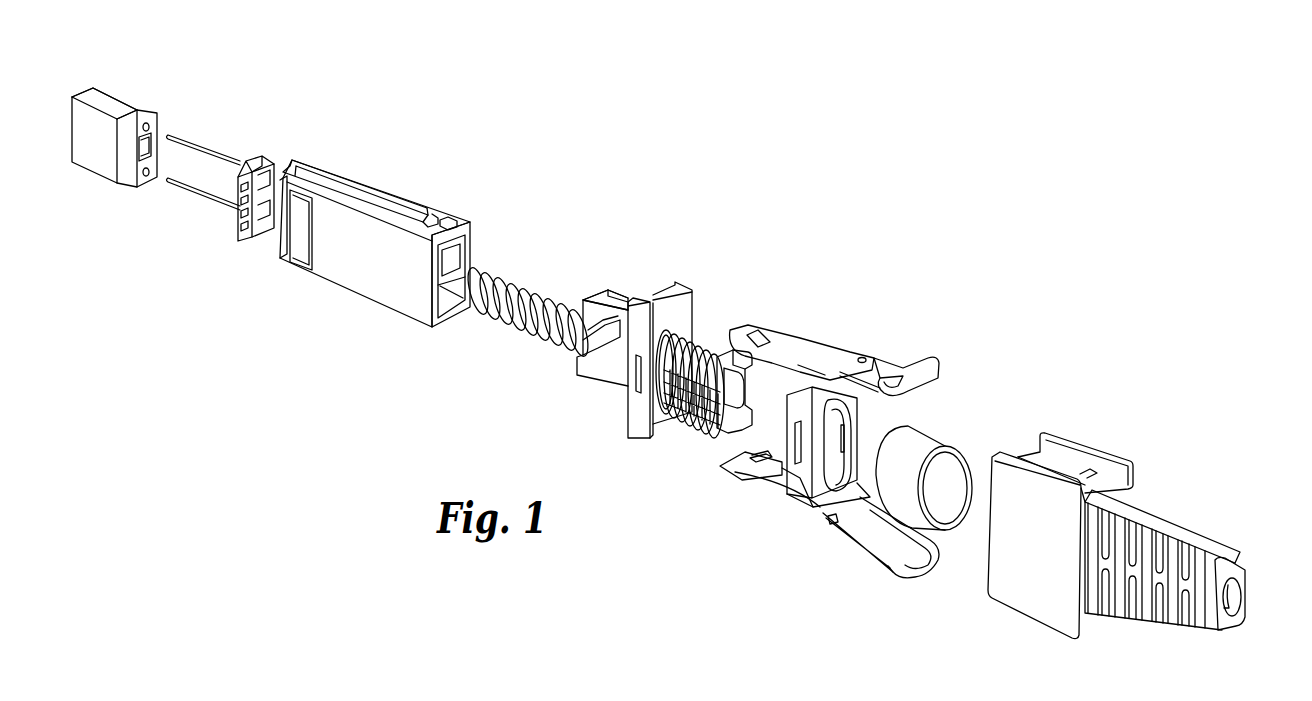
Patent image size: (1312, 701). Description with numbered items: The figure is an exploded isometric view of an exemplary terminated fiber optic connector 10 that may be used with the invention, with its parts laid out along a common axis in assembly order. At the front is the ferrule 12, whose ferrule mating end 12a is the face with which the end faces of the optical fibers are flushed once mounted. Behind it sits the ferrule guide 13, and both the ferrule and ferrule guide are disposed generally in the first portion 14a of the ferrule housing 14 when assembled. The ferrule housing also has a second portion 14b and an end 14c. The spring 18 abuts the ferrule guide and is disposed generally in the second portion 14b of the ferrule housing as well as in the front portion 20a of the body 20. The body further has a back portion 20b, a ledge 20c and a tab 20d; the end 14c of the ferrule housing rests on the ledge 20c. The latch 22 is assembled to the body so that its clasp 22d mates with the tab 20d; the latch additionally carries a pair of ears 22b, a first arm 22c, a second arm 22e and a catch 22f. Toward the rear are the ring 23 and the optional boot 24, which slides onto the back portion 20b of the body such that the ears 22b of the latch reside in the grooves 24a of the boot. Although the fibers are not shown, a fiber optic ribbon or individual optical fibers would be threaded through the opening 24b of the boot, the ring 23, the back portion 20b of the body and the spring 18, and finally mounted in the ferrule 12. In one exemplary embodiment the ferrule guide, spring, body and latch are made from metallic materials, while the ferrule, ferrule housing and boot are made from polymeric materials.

The terminated fiber optic connector 10 is at (737, 198).
The ferrule 12 is at (91, 153).
The ferrule mating end 12a is at (80, 90).
The ferrule guide 13 is at (244, 233).
The ferrule housing 14 is at (355, 274).
The first portion of ferrule housing 14a is at (283, 255).
The second portion of ferrule housing 14b is at (385, 292).
The end of ferrule housing 14c is at (436, 327).
The spring 18 is at (515, 320).
The body 20 is at (642, 344).
The front portion of body 20a is at (596, 300).
The back portion of body 20b is at (702, 338).
The ledge of body 20c is at (614, 349).
The tab of body 20d is at (640, 374).
The latch 22 is at (805, 433).
The ears of latch 22b is at (945, 365).
The first arm of latch 22c is at (784, 338).
The clasp of latch 22d is at (796, 470).
The second arm of latch 22e is at (722, 466).
The catch of latch 22f is at (727, 470).
The ring 23 is at (930, 433).
The boot 24 is at (1137, 527).
The grooves of boot 24a is at (1066, 458).
The opening of boot 24b is at (1242, 600).